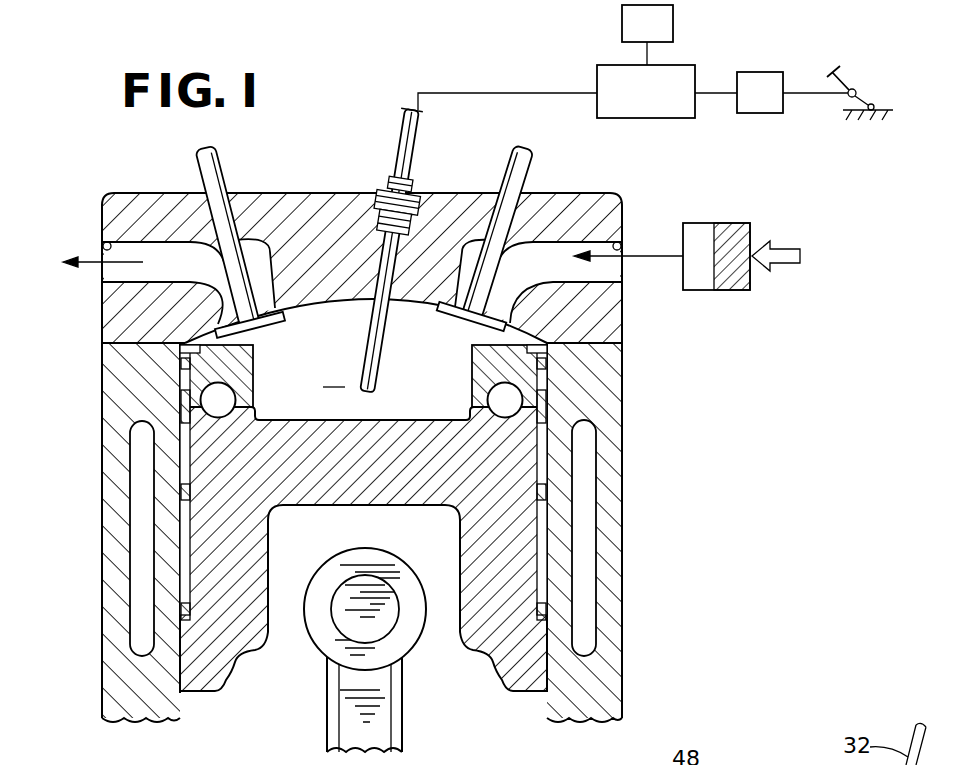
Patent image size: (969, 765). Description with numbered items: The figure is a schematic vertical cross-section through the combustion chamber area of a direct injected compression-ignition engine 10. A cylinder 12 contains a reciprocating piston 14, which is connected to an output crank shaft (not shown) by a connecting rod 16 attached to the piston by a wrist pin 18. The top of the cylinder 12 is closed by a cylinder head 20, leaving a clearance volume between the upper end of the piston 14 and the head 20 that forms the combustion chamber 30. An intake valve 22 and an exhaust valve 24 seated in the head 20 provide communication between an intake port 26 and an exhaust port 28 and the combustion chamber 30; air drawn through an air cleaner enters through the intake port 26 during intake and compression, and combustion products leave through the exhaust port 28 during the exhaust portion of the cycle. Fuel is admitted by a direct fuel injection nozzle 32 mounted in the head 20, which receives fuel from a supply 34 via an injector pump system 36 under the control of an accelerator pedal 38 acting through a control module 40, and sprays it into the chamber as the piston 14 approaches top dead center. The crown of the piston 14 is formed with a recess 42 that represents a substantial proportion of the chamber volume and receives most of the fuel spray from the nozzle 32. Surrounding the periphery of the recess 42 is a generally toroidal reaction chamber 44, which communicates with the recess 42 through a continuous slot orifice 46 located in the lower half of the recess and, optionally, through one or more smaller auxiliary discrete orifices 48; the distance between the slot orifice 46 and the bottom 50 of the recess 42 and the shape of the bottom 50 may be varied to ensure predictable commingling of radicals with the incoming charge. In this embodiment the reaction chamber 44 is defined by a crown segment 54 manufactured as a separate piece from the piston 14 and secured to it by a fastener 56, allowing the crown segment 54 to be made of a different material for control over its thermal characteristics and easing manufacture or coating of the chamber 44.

The compression-ignition engine 10 is at (650, 407).
The cylinder 12 is at (547, 704).
The piston 14 is at (230, 672).
The connecting rod 16 is at (327, 718).
The wrist pin 18 is at (345, 588).
The cylinder head 20 is at (622, 327).
The intake valve 22 is at (468, 316).
The exhaust valve 24 is at (256, 318).
The intake port 26 is at (622, 246).
The exhaust port 28 is at (104, 244).
The combustion chamber 30 is at (350, 349).
The direct fuel injection nozzle 32 is at (378, 368).
The fuel supply 34 is at (675, 22).
The injector pump system 36 is at (607, 65).
The accelerator pedal 38 is at (838, 68).
The control module 40 is at (758, 72).
The recess 42 is at (330, 407).
The reaction chamber 44 is at (192, 405).
The continuous slot orifice 46 is at (478, 410).
The auxiliary discrete orifice 48 is at (205, 401).
The bottom of recess 50 is at (387, 421).
The crown segment 54 is at (472, 368).
The fastener 56 is at (188, 363).